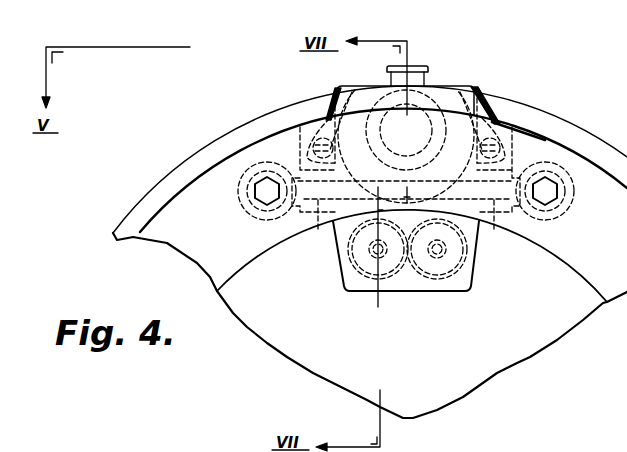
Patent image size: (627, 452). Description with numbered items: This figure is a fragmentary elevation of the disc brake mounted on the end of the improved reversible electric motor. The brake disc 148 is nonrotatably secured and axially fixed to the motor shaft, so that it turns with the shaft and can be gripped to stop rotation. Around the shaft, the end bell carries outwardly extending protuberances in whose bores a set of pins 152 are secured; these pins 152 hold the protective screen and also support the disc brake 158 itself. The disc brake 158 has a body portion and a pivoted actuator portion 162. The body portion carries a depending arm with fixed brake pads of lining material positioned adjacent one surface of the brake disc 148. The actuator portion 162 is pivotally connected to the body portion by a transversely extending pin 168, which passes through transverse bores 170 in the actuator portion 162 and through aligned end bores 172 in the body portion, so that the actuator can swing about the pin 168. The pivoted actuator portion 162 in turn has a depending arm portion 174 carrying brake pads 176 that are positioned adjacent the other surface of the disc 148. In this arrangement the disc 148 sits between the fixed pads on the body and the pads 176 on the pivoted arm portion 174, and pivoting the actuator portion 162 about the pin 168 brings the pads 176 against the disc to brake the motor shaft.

The brake disc 148 is at (518, 362).
The pins 152 is at (258, 197).
The disc brake 158 is at (486, 90).
The actuator portion 162 is at (440, 85).
The transversely extending pin 168 is at (512, 215).
The transverse bores 170 is at (478, 250).
The end bores 172 is at (319, 229).
The depending arm portion 174 is at (368, 291).
The brake pads 176 is at (356, 270).